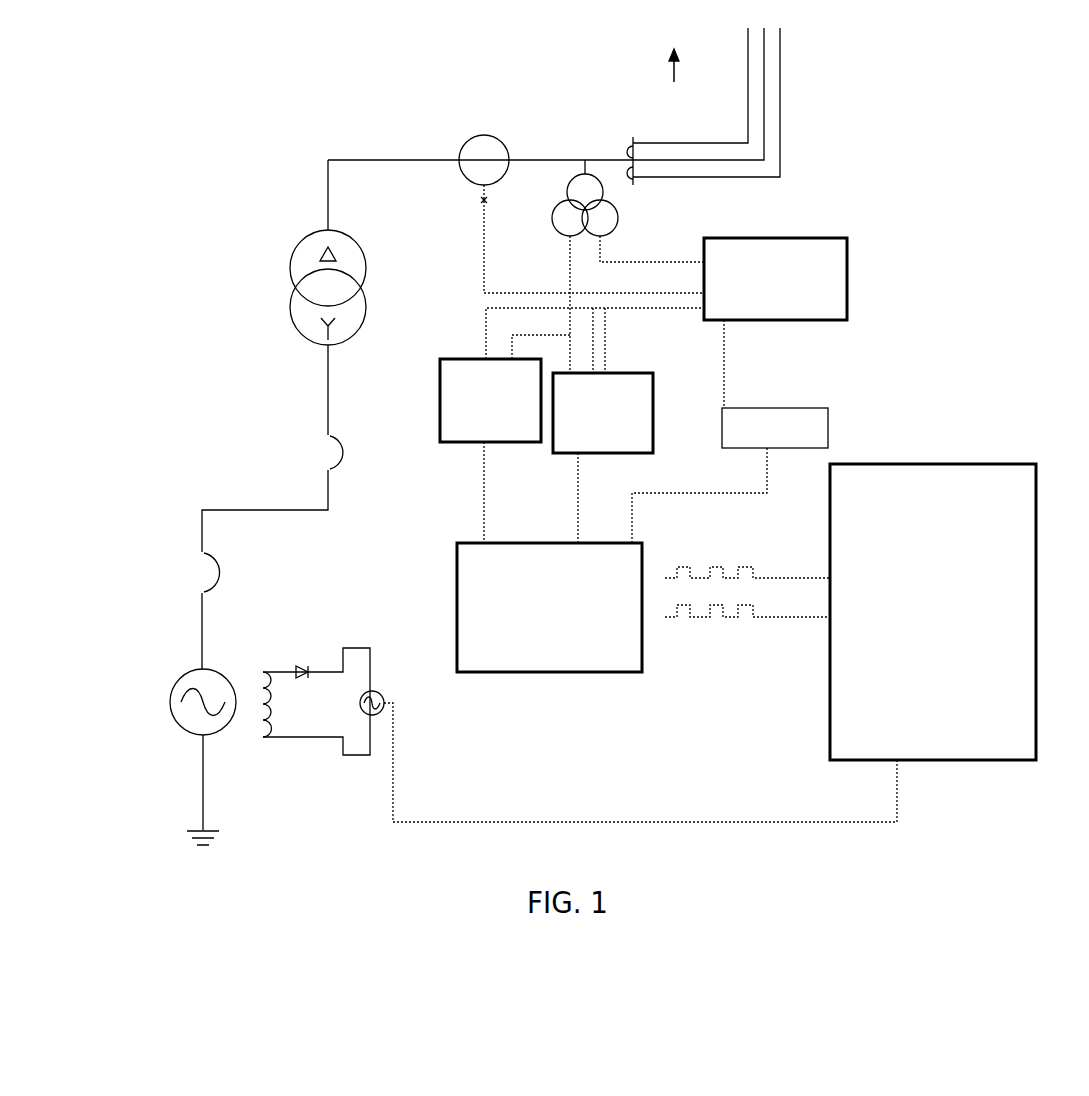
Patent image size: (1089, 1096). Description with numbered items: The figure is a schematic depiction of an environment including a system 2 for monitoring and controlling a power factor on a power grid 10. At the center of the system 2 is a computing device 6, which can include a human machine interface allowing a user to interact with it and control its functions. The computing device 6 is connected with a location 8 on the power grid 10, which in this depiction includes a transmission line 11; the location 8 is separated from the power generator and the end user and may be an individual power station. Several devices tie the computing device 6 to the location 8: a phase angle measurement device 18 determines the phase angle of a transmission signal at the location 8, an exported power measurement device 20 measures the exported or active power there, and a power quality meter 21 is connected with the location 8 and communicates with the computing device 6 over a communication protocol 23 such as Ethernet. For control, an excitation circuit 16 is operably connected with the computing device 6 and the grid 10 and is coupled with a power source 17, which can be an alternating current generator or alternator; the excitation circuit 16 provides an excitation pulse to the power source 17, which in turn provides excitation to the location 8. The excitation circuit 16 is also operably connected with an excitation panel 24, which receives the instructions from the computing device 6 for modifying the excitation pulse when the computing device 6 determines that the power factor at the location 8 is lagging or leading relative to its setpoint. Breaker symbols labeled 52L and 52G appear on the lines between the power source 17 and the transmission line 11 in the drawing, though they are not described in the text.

The system 2 is at (367, 576).
The computing device 6 is at (456, 559).
The location on the power grid 8 is at (538, 104).
The power grid 10 is at (676, 77).
The transmission line 11 is at (780, 106).
The excitation circuit 16 is at (367, 839).
The power source 17 is at (153, 675).
The phase angle measurement device 18 is at (438, 409).
The exported power measurement device 20 is at (655, 398).
The power quality meter 21 is at (849, 271).
The communication protocol 23 is at (830, 414).
The excitation panel 24 is at (1038, 561).
The line breaker 52L is at (355, 452).
The generator breaker 52G is at (233, 572).